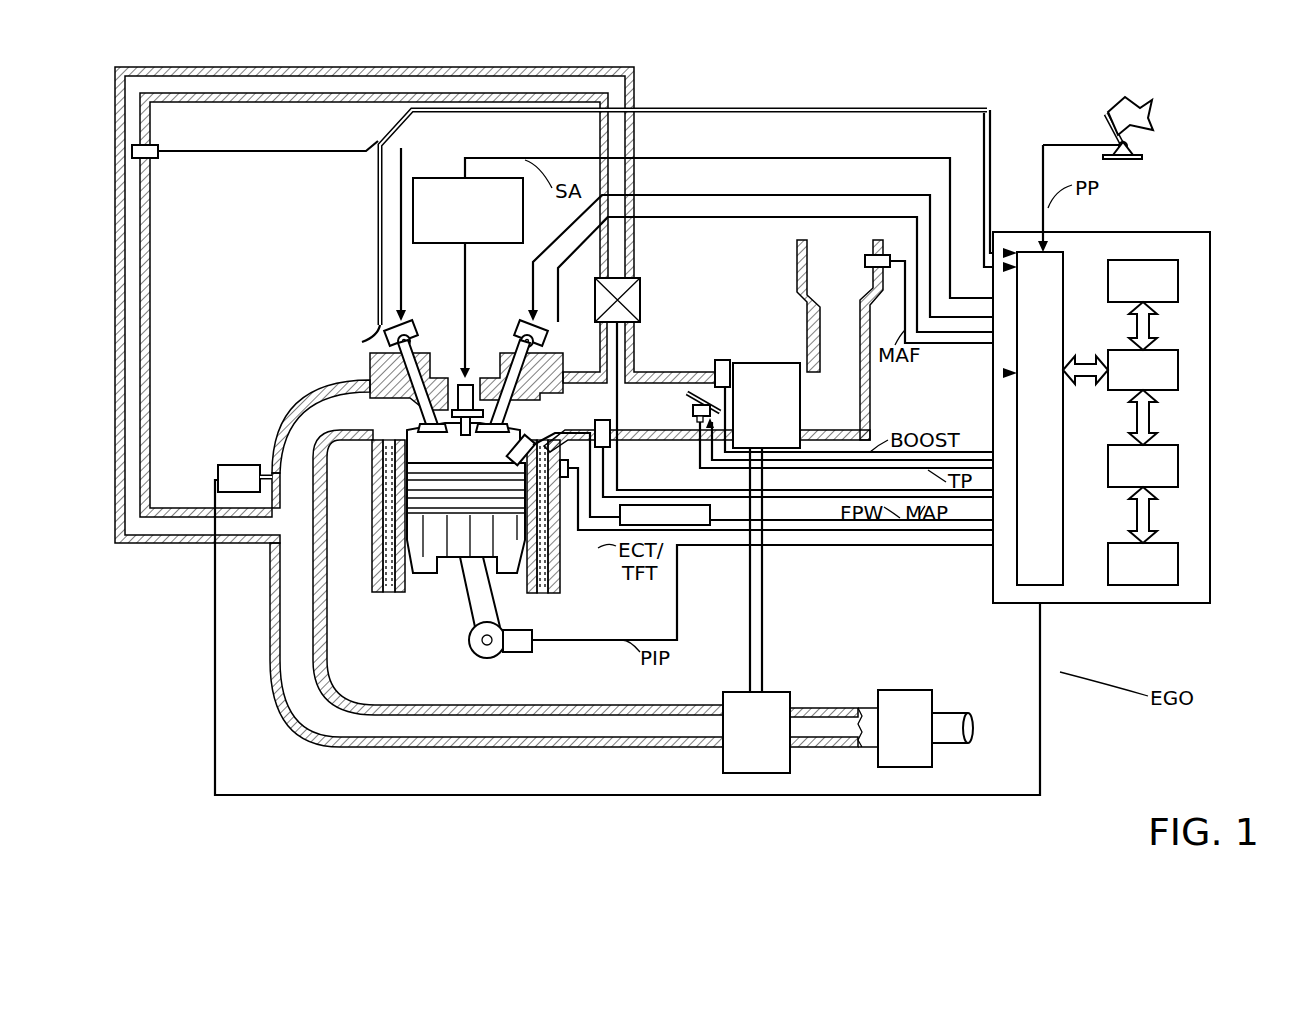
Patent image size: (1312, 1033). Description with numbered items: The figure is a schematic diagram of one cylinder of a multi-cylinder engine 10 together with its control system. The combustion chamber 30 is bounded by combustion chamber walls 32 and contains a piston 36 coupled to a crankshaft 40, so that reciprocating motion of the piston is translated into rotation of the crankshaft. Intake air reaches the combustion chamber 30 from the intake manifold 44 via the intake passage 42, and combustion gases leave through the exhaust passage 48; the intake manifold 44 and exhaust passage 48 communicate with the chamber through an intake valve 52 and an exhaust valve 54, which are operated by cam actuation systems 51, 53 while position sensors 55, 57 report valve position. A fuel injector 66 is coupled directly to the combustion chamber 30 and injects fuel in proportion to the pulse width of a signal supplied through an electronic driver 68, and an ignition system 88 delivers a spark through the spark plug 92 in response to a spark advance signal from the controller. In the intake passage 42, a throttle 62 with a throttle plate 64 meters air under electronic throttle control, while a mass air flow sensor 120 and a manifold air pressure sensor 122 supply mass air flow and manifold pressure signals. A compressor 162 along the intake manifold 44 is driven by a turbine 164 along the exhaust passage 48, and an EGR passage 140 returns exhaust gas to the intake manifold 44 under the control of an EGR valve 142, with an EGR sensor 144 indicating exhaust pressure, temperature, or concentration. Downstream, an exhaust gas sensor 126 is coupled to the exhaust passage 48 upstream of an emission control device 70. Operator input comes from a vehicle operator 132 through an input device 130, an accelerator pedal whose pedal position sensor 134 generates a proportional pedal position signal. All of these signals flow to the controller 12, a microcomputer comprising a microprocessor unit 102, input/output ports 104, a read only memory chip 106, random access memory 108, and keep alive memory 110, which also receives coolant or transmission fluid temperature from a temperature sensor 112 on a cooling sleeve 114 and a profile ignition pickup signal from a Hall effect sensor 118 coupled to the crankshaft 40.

The engine 10 is at (303, 305).
The controller 12 is at (1143, 404).
The combustion chamber 30 is at (373, 553).
The combustion chamber walls 32 is at (405, 595).
The piston 36 is at (450, 545).
The crankshaft 40 is at (475, 655).
The intake passage 42 is at (840, 340).
The intake manifold 44 is at (707, 416).
The exhaust passage 48 is at (321, 426).
The intake cam actuation system 51 is at (530, 322).
The intake valve 52 is at (507, 425).
The exhaust cam actuation system 53 is at (413, 322).
The exhaust valve 54 is at (385, 366).
The intake valve position sensor 55 is at (548, 338).
The exhaust valve position sensor 57 is at (387, 343).
The throttle 62 is at (688, 394).
The throttle plate 64 is at (694, 408).
The fuel injector 66 is at (510, 450).
The electronic driver 68 is at (710, 512).
The emission control device 70 is at (925, 728).
The ignition system 88 is at (422, 178).
The spark plug 92 is at (470, 370).
The microprocessor unit 102 is at (1178, 368).
The input/output ports 104 is at (1063, 260).
The read only memory chip 106 is at (1178, 275).
The random access memory 108 is at (1178, 465).
The keep alive memory 110 is at (1178, 560).
The temperature sensor 112 is at (570, 478).
The cooling sleeve 114 is at (558, 565).
The Hall effect sensor 118 is at (522, 652).
The mass air flow sensor 120 is at (892, 247).
The manifold air pressure sensor 122 is at (597, 422).
The exhaust gas sensor 126 is at (218, 470).
The input device 130 is at (1102, 122).
The vehicle operator 132 is at (1150, 108).
The pedal position sensor 134 is at (1135, 148).
The EGR passage 140 is at (383, 67).
The EGR valve 142 is at (640, 298).
The EGR sensor 144 is at (158, 158).
The compressor 162 is at (866, 526).
The turbine 164 is at (800, 732).